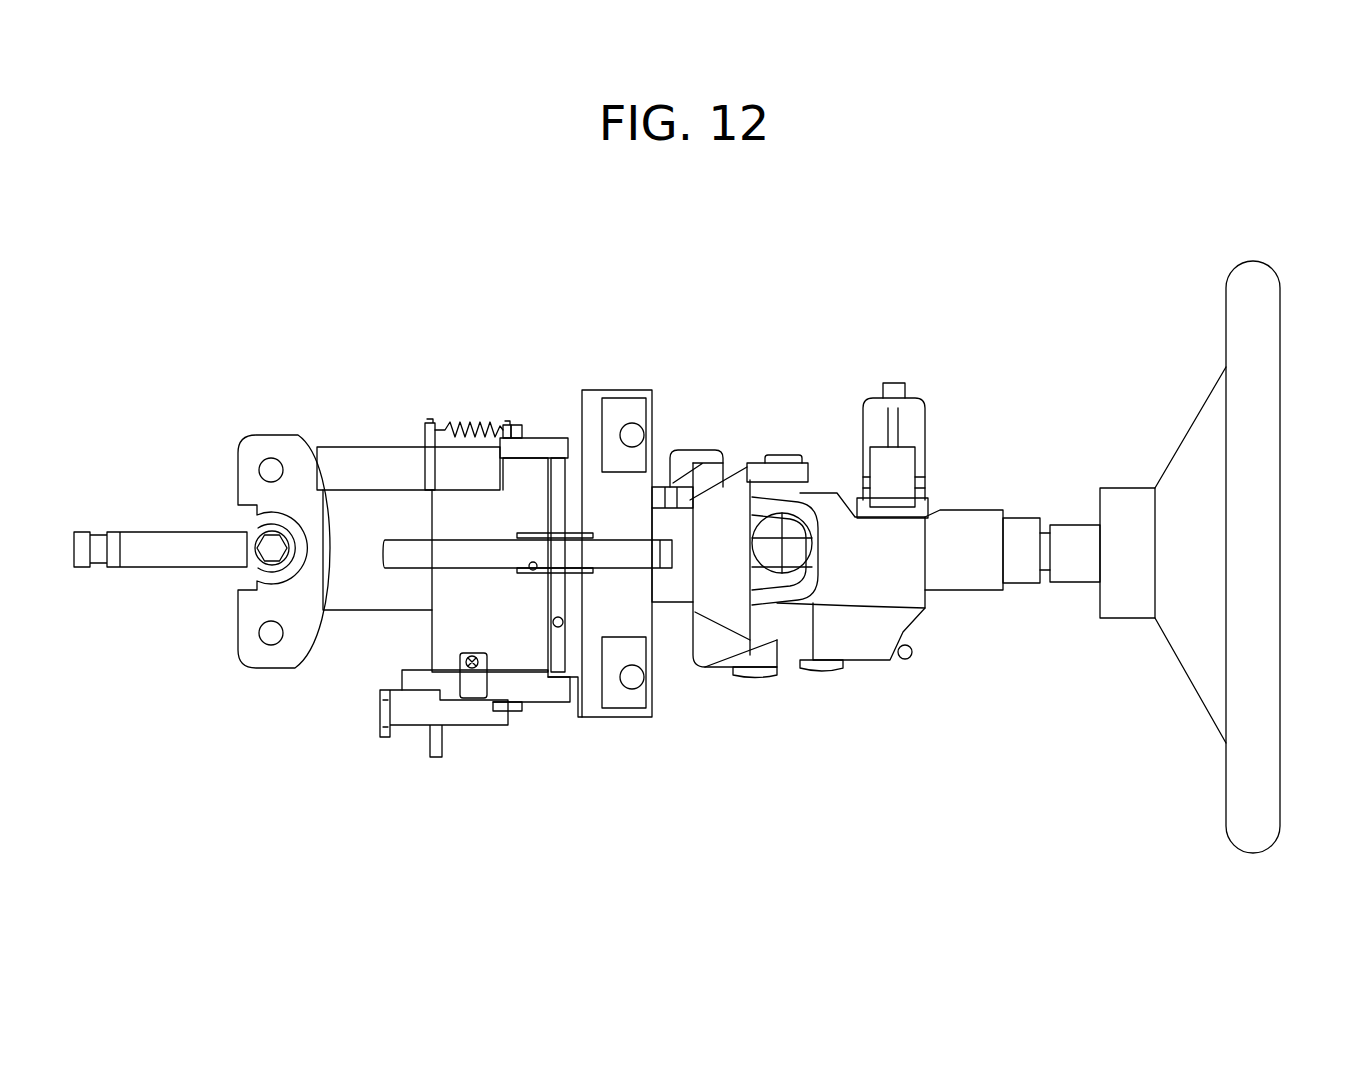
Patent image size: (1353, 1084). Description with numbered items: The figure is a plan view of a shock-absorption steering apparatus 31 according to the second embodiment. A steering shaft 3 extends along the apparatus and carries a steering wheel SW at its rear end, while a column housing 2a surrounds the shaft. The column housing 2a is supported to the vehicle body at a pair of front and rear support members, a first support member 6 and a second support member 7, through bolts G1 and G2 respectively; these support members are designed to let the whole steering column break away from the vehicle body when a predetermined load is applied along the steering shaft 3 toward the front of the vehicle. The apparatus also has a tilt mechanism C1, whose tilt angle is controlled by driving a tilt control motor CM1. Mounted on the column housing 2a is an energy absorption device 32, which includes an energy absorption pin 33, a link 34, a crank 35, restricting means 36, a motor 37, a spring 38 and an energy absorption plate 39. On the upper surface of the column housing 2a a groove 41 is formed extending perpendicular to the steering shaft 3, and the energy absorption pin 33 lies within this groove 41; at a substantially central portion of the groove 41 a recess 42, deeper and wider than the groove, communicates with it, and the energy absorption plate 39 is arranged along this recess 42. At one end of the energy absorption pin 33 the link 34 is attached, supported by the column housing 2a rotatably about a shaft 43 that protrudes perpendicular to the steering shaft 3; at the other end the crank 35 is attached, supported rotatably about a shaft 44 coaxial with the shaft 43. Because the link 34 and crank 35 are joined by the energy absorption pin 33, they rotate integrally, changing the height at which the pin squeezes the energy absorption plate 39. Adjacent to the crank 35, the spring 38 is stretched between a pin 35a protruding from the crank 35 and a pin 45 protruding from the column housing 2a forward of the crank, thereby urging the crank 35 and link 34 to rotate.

The steering shaft 3 is at (160, 536).
The first support member 6 is at (257, 650).
The bolt G1 is at (255, 571).
The energy absorption device 32 is at (484, 336).
The pin 45 is at (425, 440).
The spring 38 is at (458, 423).
The pin 35a is at (503, 428).
The shaft 44 is at (517, 425).
The crank 35 is at (552, 437).
The energy absorption plate 39 is at (452, 543).
The recess 42 is at (531, 571).
The energy absorption pin 33 is at (566, 490).
The groove 41 is at (563, 622).
The column housing 2a is at (588, 397).
The second support member 7 is at (645, 413).
The bolt G2 is at (638, 430).
The restricting means 36 is at (476, 744).
The shaft 43 is at (512, 712).
The link 34 is at (555, 700).
The motor 37 is at (393, 738).
The shock-absorption steering apparatus 31 is at (902, 264).
The tilt mechanism C1 is at (786, 455).
The tilt control motor CM1 is at (912, 398).
The steering wheel SW is at (1253, 261).